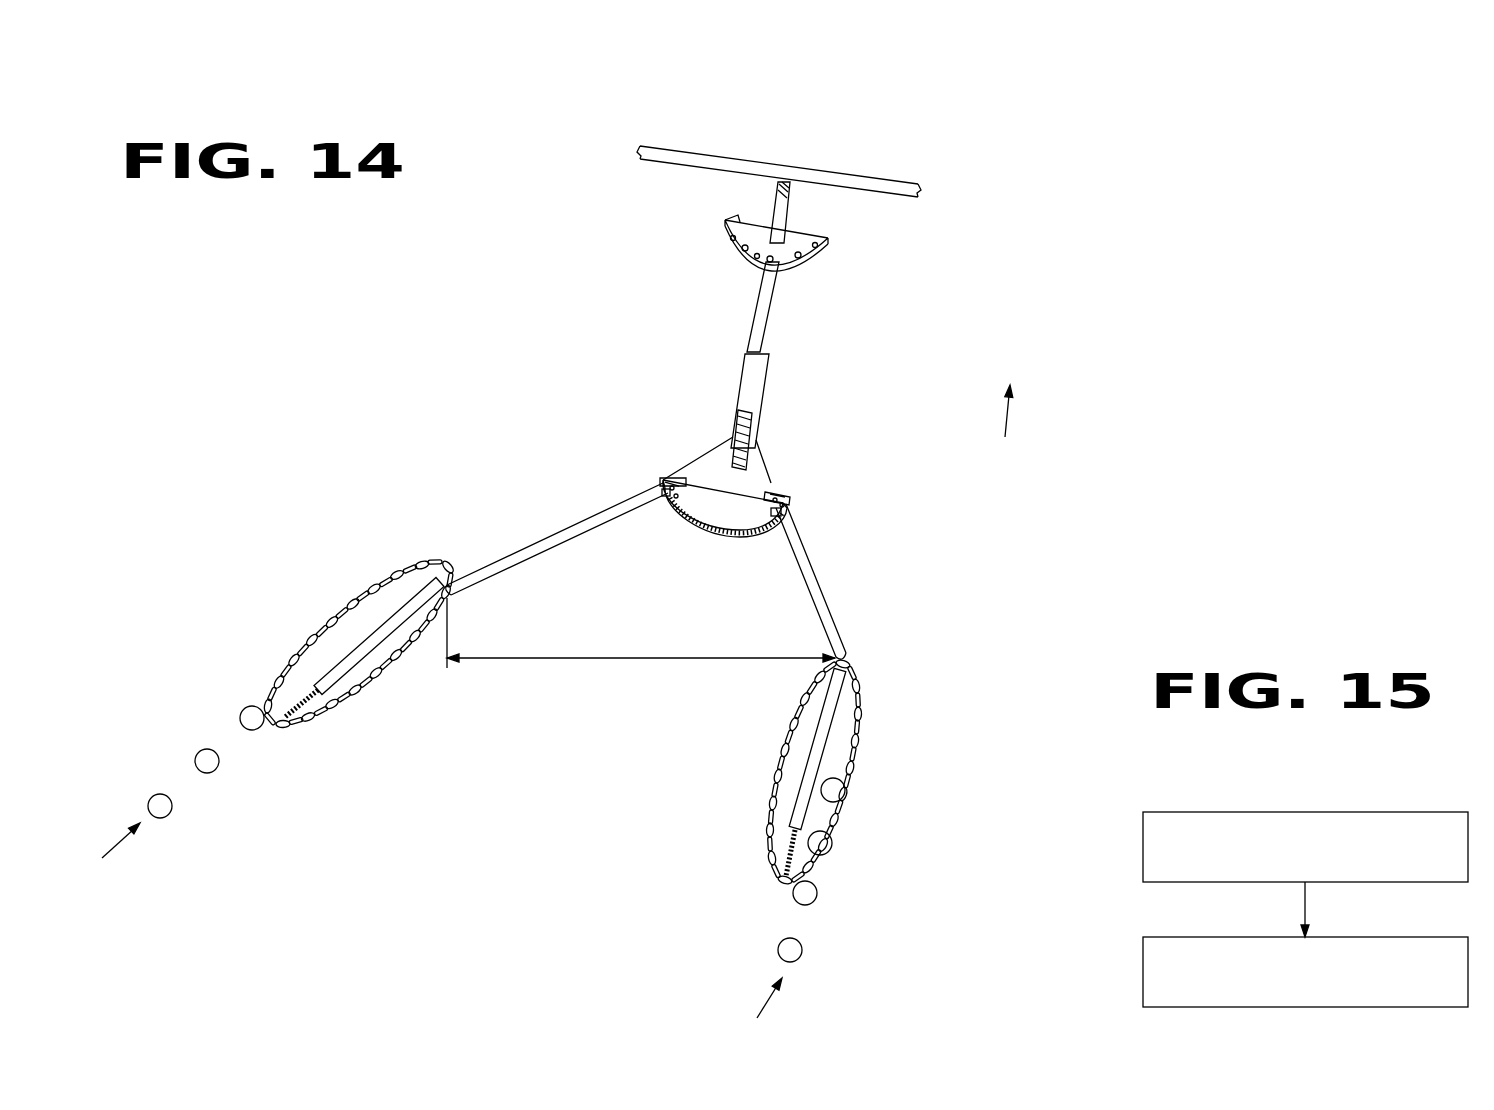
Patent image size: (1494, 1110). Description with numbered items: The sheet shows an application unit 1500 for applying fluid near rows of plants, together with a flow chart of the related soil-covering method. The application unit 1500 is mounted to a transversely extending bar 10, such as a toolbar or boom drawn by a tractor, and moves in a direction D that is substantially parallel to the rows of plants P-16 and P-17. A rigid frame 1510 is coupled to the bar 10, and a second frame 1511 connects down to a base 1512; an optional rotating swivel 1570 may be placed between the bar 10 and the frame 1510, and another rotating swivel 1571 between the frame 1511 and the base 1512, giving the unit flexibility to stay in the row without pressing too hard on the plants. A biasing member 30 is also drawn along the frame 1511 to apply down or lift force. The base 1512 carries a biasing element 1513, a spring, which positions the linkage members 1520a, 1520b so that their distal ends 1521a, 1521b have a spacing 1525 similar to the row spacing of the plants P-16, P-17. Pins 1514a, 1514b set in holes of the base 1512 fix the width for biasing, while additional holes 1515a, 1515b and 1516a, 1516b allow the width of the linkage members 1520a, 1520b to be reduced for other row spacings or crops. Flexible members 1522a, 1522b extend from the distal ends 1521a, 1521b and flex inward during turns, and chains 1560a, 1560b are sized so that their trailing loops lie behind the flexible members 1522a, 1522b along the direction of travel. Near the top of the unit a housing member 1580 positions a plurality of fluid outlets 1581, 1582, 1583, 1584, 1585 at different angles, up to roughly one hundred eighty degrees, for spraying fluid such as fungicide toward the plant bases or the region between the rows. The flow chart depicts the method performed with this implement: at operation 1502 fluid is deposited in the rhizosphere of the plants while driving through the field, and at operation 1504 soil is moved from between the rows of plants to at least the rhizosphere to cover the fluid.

In FIG. 14, the transversely extending bar 10 is at (853, 170).
In FIG. 14, the biasing member 30 is at (752, 370).
In FIG. 14, the application unit 1500 is at (518, 152).
In FIG. 15, the application unit 1500 is at (1288, 793).
In FIG. 15, the depositing operation 1502 is at (1143, 828).
In FIG. 15, the soil moving operation 1504 is at (1143, 976).
In FIG. 14, the rigid frame 1510 is at (785, 215).
In FIG. 14, the frame 1511 is at (768, 355).
In FIG. 14, the base 1512 is at (735, 452).
In FIG. 14, the biasing element 1513 is at (703, 525).
In FIG. 14, the pin 1514a is at (668, 482).
In FIG. 14, the pin 1514b is at (768, 505).
In FIG. 14, the hole 1515a is at (665, 484).
In FIG. 14, the hole 1515b is at (785, 508).
In FIG. 14, the hole 1516a is at (664, 496).
In FIG. 14, the hole 1516b is at (787, 537).
In FIG. 14, the linkage member 1520a is at (520, 545).
In FIG. 14, the linkage member 1520b is at (817, 585).
In FIG. 14, the distal end 1521a is at (455, 584).
In FIG. 14, the distal end 1521b is at (848, 647).
In FIG. 14, the flexible member 1522a is at (352, 648).
In FIG. 14, the flexible member 1522b is at (826, 742).
In FIG. 14, the spacing 1525 is at (625, 660).
In FIG. 14, the chain 1560a is at (378, 693).
In FIG. 14, the chain 1560b is at (752, 800).
In FIG. 14, the rotating swivel 1570 is at (786, 180).
In FIG. 14, the rotating swivel 1571 is at (755, 455).
In FIG. 14, the housing member 1580 is at (740, 226).
In FIG. 14, the fluid outlet 1581 is at (725, 232).
In FIG. 14, the fluid outlet 1582 is at (740, 252).
In FIG. 14, the fluid outlet 1583 is at (745, 270).
In FIG. 14, the fluid outlet 1584 is at (800, 258).
In FIG. 14, the fluid outlet 1585 is at (830, 244).
In FIG. 14, the direction of travel D is at (1010, 408).
In FIG. 14, the row of plants P-16 is at (122, 845).
In FIG. 14, the row of plants P-17 is at (782, 990).